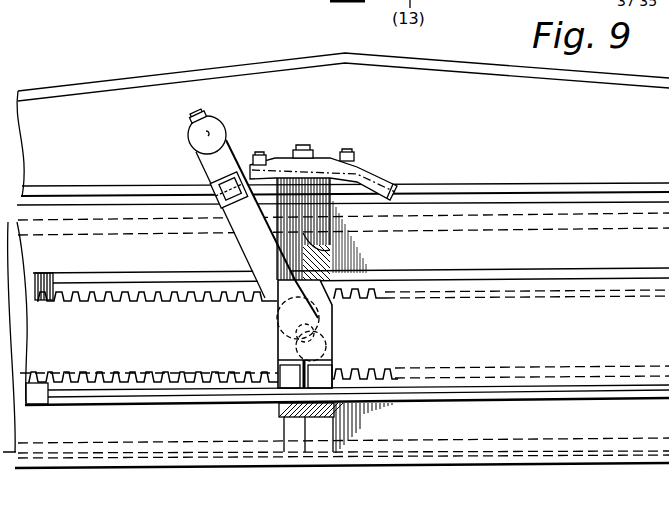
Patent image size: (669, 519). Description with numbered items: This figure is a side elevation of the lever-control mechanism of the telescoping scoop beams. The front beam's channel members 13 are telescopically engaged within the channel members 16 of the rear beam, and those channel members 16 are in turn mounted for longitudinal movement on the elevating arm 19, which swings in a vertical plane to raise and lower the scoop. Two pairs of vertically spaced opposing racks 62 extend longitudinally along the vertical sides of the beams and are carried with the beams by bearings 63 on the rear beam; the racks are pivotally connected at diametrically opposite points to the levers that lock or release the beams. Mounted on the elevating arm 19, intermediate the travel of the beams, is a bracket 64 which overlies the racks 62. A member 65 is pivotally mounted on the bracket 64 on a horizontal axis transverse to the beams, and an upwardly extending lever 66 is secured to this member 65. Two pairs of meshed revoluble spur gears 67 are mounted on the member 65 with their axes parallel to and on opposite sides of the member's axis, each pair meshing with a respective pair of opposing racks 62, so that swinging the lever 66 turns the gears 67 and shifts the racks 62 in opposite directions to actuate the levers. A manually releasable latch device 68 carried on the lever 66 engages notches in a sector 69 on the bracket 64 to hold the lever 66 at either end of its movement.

The channel members 13 is at (518, 222).
The channel members 16 is at (602, 203).
The elevating arm 19 is at (343, 125).
The racks 62 is at (173, 378).
The bearings 63 is at (293, 0).
The bracket 64 is at (340, 233).
The member 65 is at (248, 242).
The lever 66 is at (224, 134).
The spur gears 67 is at (342, 353).
The latch device 68 is at (208, 116).
The sector 69 is at (360, 167).